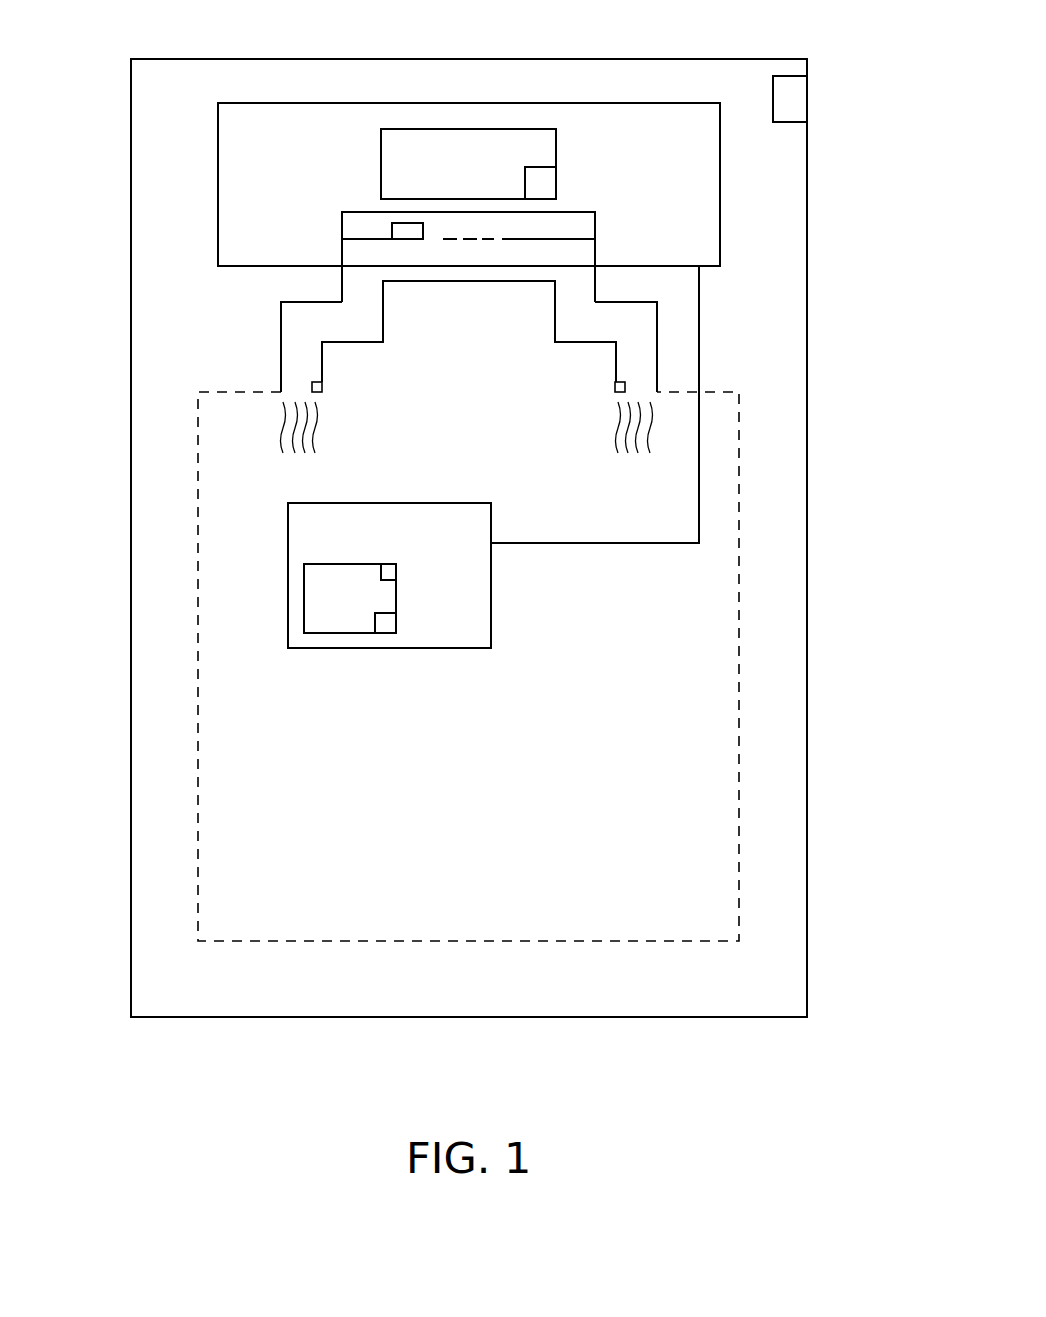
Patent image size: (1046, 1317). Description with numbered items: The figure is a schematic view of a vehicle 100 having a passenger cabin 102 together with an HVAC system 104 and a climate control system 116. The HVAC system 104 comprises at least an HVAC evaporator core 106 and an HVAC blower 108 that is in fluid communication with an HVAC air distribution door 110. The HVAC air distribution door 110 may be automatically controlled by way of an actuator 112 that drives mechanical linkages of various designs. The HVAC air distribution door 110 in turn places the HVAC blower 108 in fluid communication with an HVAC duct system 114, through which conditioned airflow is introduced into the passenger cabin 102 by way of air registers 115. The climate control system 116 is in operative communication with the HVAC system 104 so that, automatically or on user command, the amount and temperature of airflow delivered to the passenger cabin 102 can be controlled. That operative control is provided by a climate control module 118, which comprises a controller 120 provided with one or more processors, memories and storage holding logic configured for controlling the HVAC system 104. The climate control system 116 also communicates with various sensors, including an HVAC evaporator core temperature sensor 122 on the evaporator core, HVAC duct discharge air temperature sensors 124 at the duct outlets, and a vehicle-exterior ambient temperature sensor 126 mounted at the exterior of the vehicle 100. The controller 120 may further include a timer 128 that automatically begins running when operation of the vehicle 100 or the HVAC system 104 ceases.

The vehicle 100 is at (145, 226).
The passenger cabin 102 is at (198, 686).
The HVAC system 104 is at (722, 185).
The HVAC evaporator core 106 is at (514, 129).
The HVAC blower 108 is at (342, 228).
The HVAC air distribution door 110 is at (481, 239).
The actuator 112 is at (407, 231).
The HVAC duct system 114 is at (281, 347).
The air registers 115 is at (326, 404).
The climate control system 116 is at (467, 650).
The climate control module 118 is at (315, 635).
The controller 120 is at (385, 625).
The HVAC evaporator core temperature sensor 122 is at (545, 183).
The HVAC duct discharge air temperature sensor 124 is at (323, 387).
The vehicle-exterior ambient temperature sensor 126 is at (790, 85).
The timer 128 is at (398, 572).